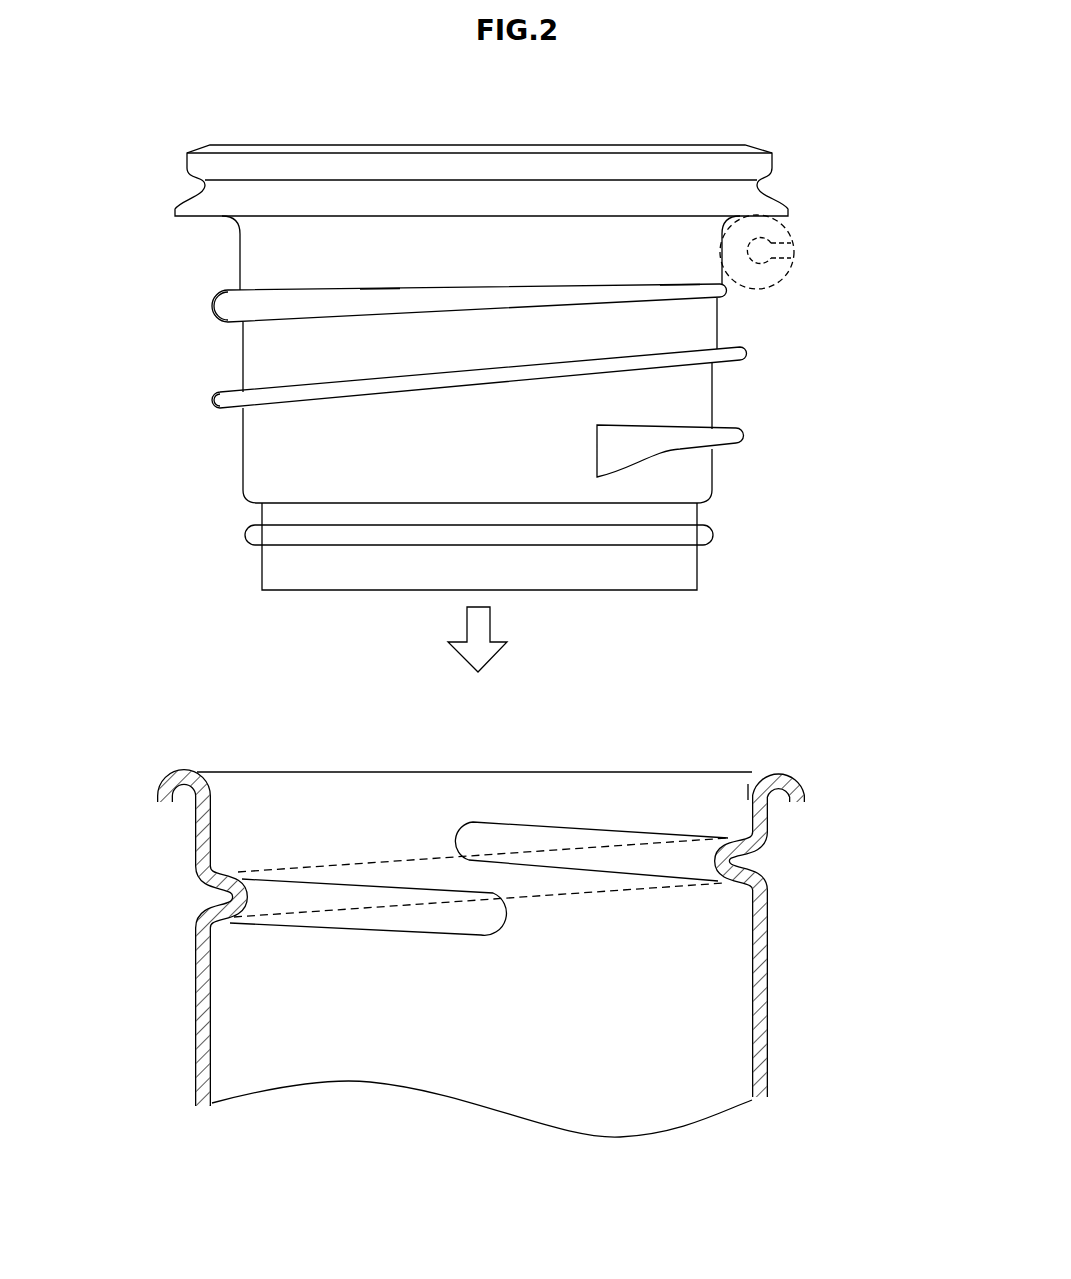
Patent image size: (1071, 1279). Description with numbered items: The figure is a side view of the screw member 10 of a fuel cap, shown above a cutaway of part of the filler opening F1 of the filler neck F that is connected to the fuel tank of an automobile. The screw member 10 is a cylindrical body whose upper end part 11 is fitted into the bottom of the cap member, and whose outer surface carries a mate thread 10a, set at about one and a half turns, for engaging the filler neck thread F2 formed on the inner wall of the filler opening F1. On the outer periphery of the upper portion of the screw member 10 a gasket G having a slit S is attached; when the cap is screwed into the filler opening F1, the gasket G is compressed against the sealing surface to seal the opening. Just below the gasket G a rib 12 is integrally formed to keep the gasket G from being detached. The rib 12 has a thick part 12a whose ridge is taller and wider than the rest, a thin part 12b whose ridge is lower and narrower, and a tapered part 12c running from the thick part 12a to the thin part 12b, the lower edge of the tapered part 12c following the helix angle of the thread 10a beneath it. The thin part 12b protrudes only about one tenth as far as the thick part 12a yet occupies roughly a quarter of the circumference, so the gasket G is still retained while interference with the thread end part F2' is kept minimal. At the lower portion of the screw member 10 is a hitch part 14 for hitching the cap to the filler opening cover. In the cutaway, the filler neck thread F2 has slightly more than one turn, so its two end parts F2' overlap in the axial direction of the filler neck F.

The screw member 10 is at (170, 462).
The thread 10a is at (210, 400).
The upper end part 11 is at (765, 193).
The rib 12 is at (200, 312).
The thick part 12a is at (214, 300).
The thin part 12b is at (680, 291).
The tapered part 12c is at (380, 300).
The hitch part 14 is at (244, 537).
The gasket G is at (788, 236).
The slit S is at (792, 255).
The filler neck F is at (783, 963).
The filler opening F1 is at (748, 782).
The filler neck thread F2 is at (481, 799).
The end part F2' is at (368, 827).